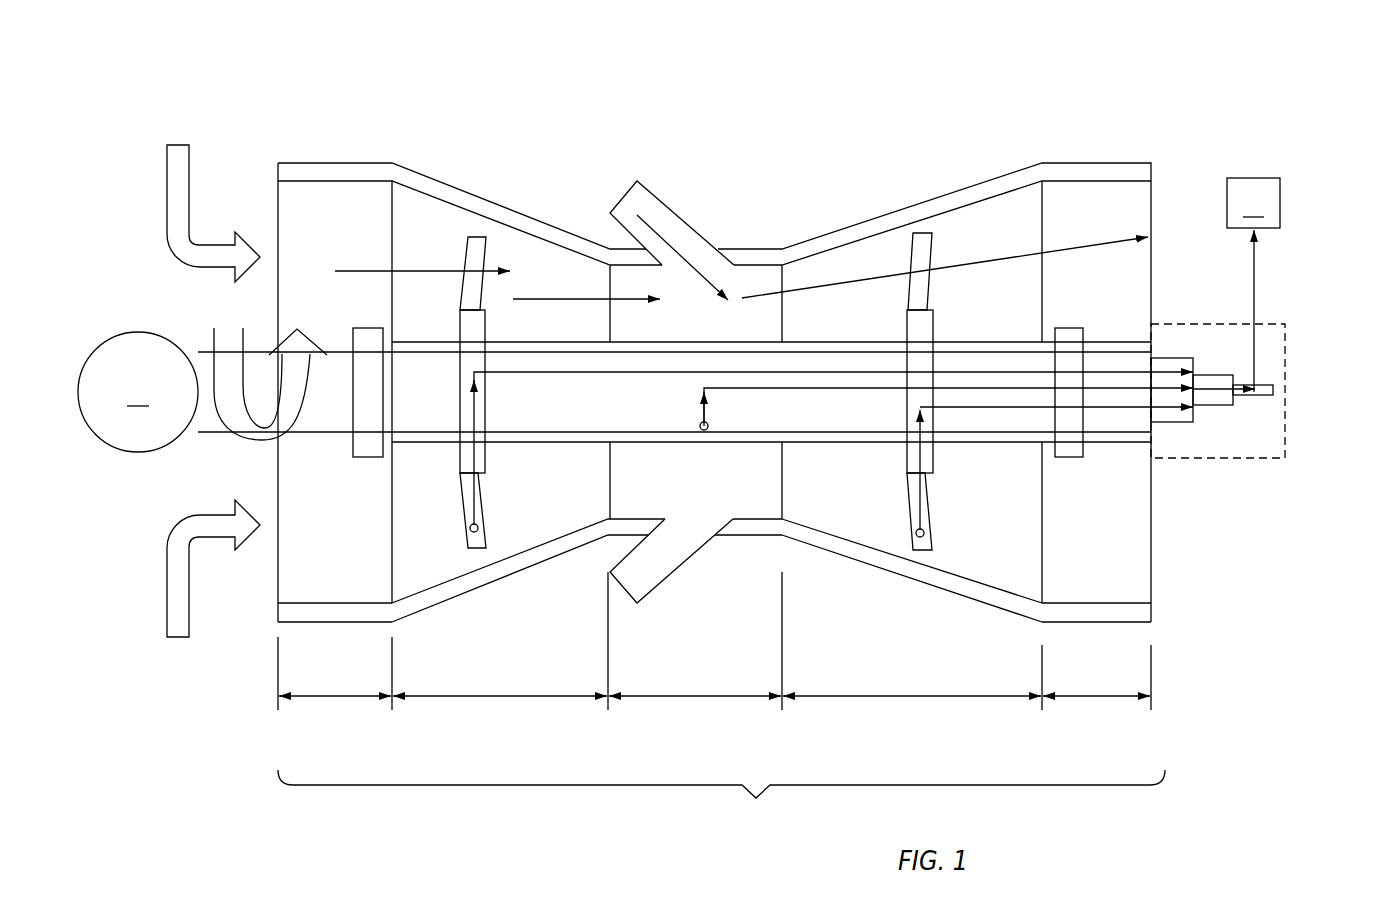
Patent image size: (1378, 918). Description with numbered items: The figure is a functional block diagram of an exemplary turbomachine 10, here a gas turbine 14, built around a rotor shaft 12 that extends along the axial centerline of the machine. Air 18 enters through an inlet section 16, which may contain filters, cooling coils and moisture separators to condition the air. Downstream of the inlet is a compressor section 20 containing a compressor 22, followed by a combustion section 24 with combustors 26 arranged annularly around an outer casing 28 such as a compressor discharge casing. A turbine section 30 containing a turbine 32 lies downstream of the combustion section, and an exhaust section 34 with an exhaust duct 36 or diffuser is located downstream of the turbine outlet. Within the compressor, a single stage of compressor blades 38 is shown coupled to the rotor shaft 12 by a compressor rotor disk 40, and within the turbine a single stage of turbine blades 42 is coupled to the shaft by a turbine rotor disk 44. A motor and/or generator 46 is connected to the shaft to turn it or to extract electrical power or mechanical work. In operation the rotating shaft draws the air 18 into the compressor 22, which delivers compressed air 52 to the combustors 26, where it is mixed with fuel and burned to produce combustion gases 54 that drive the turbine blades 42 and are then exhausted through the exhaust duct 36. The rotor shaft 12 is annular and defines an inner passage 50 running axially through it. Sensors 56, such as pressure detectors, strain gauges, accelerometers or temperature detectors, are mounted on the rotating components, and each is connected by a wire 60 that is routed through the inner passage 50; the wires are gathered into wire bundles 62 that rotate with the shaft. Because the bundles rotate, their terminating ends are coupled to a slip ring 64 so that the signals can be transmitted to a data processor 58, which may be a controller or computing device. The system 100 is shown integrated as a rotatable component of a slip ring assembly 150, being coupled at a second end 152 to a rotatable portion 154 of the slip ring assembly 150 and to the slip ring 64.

The turbomachine 10 is at (821, 93).
The rotor shaft 12 is at (653, 445).
The gas turbine 14 is at (721, 499).
The inlet section 16 is at (310, 698).
The air 18 is at (177, 178).
The compressor section 20 is at (470, 698).
The compressor 22 is at (507, 582).
The combustion section 24 is at (682, 698).
The combustors 26 is at (658, 186).
The outer casing 28 is at (748, 525).
The turbine section 30 is at (883, 698).
The turbine 32 is at (911, 593).
The exhaust section 34 is at (1080, 698).
The exhaust duct 36 is at (1111, 631).
The compressor blades 38 is at (483, 507).
The compressor rotor disk 40 is at (471, 361).
The turbine blades 42 is at (933, 508).
The turbine rotor disk 44 is at (905, 402).
The motor and/or generator 46 is at (202, 390).
The inner passage 50 is at (653, 367).
The compressed air 52 is at (537, 297).
The combustion gases 54 is at (688, 260).
The sensors 56 is at (470, 533).
The data processor 58 is at (1253, 285).
The wires 60 is at (462, 448).
The wire bundles 62 is at (527, 375).
The slip ring 64 is at (1265, 386).
The system 100 is at (1172, 430).
The slip ring assembly 150 is at (1262, 325).
The second end 152 is at (1193, 372).
The rotatable portion 154 is at (1212, 405).